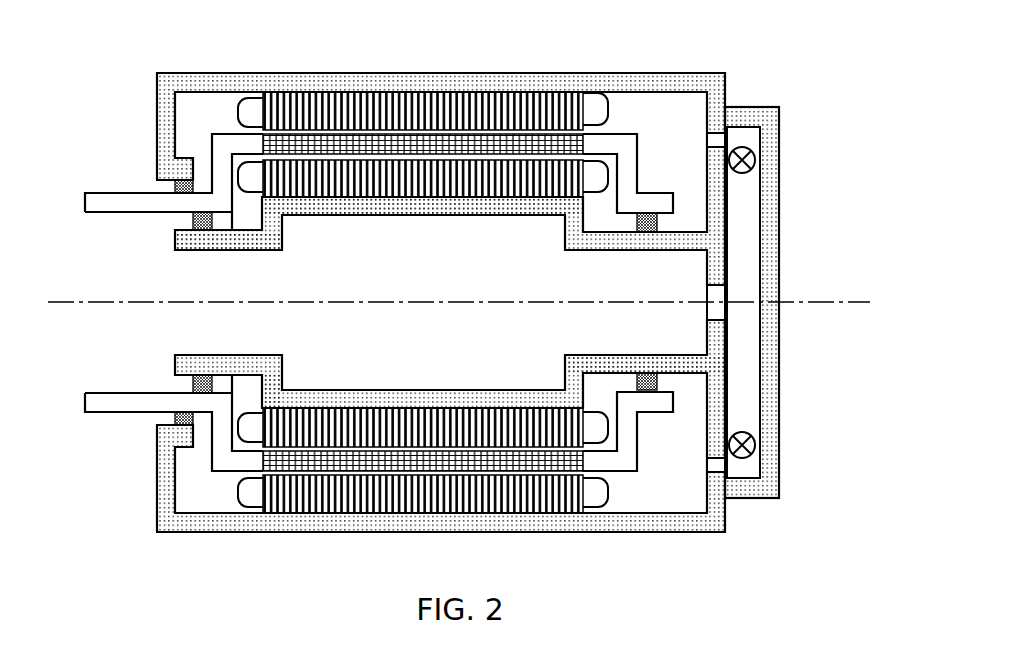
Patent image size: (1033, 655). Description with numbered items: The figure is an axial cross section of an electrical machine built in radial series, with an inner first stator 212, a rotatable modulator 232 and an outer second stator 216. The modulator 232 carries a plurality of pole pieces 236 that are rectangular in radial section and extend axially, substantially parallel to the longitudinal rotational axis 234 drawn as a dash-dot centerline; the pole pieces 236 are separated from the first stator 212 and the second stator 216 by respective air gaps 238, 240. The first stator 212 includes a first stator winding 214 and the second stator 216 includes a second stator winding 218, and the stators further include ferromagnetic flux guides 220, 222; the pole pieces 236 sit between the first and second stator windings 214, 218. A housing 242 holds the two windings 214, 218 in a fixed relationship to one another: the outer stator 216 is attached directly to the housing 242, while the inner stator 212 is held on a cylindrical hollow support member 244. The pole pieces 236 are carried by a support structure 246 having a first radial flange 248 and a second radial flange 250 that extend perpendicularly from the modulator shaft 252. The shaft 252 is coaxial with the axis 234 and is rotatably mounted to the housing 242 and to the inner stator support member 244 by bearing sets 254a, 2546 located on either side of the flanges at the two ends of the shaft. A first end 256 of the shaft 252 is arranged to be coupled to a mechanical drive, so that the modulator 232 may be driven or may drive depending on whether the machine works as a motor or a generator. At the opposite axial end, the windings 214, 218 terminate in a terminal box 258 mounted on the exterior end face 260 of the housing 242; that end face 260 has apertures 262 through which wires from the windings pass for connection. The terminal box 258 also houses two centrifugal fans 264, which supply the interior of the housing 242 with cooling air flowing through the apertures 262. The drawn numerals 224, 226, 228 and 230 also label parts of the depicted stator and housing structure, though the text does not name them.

The first stator 212 is at (423, 241).
The first stator winding 214 is at (250, 178).
The second stator 216 is at (441, 153).
The second stator winding 218 is at (603, 98).
The ferromagnetic flux guide 220 is at (377, 112).
The ferromagnetic flux guide 222 is at (357, 182).
The coil end turn 224 is at (262, 118).
The laminated core 226 is at (528, 160).
The rotor yoke 228 is at (543, 203).
The housing 230 is at (473, 78).
The modulator 232 is at (630, 132).
The longitudinal axis 234 is at (76, 302).
The pole piece 236 is at (262, 142).
The air gap 238 is at (288, 445).
The air gap 240 is at (423, 75).
The housing 242 is at (406, 457).
The cylindrical hollow support member 244 is at (224, 246).
The support structure 246 is at (198, 467).
The first radial flange 248 is at (275, 385).
The second radial flange 250 is at (627, 442).
The modulator shaft 252 is at (662, 403).
The bearing set 254a is at (165, 381).
The bearing set 2546 is at (640, 373).
The first end 256 is at (85, 400).
The terminal box 258 is at (796, 302).
The exterior end face 260 is at (725, 407).
The aperture 262 is at (717, 140).
The centrifugal fan 264 is at (747, 173).